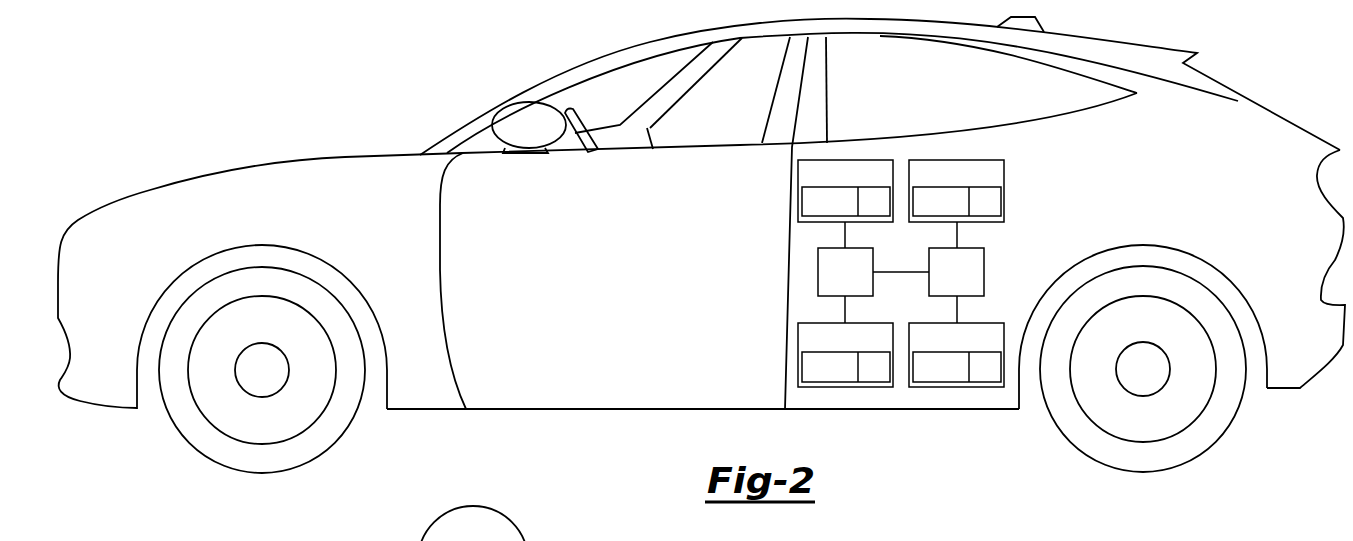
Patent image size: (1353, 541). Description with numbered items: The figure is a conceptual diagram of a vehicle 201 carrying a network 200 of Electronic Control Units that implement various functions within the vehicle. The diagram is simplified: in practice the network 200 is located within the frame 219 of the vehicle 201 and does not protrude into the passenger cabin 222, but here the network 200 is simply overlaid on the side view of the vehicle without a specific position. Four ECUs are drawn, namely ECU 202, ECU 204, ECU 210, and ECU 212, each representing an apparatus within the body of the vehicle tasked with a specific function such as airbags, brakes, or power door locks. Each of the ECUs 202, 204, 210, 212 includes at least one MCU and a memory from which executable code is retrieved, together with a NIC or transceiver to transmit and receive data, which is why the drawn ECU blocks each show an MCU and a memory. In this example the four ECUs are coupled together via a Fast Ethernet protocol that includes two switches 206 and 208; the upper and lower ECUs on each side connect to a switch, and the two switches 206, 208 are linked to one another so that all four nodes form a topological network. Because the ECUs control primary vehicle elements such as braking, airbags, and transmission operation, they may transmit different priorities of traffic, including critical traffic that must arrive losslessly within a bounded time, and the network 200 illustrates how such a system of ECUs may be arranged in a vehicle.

The network 200 is at (1070, 162).
The vehicle 201 is at (518, 93).
The passenger cabin 222 is at (610, 104).
The Electronic Control Unit 202 is at (798, 192).
The Electronic Control Unit 204 is at (798, 357).
The Electronic Control Unit 210 is at (1004, 190).
The Electronic Control Unit 212 is at (957, 388).
The switch 206 is at (818, 275).
The switch 208 is at (985, 272).
The frame 219 is at (421, 409).